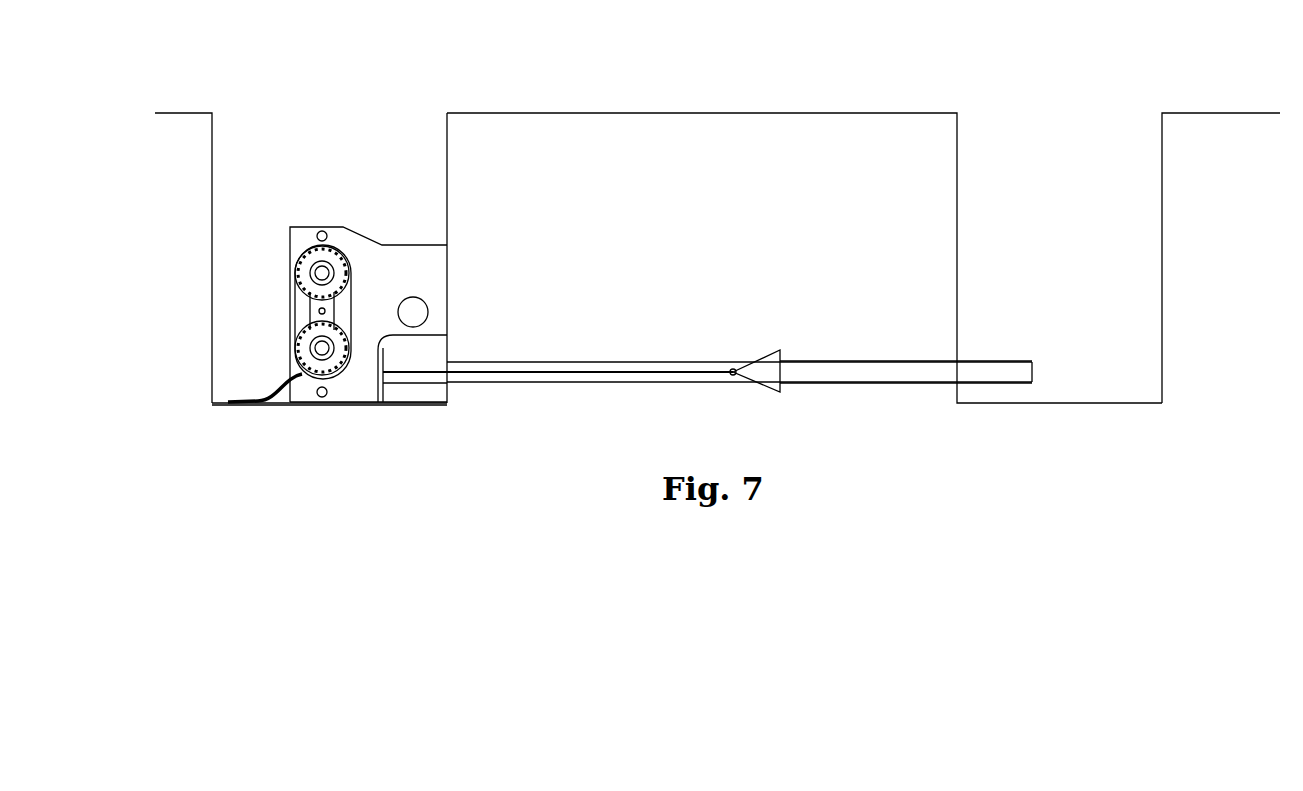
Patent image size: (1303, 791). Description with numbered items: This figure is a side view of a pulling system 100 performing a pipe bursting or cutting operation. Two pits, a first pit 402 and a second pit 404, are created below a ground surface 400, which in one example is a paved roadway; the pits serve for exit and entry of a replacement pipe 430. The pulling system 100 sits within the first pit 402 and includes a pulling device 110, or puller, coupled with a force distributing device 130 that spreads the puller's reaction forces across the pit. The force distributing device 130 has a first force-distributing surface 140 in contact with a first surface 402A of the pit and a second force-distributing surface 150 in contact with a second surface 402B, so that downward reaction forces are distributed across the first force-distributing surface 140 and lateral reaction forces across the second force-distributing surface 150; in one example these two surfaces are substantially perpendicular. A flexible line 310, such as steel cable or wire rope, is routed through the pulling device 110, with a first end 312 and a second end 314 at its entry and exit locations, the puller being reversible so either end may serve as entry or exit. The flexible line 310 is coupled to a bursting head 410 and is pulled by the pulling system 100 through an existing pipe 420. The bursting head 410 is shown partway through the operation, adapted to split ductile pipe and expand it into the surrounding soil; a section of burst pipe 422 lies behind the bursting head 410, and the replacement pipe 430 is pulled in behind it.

The pulling system 100 is at (370, 212).
The pulling device 110 is at (300, 247).
The force distributing device 130 is at (358, 388).
The first force-distributing surface 140 is at (338, 405).
The second force-distributing surface 150 is at (448, 300).
The flexible line 310 is at (599, 372).
The first end 312 is at (734, 370).
The second end 314 is at (233, 397).
The ground surface 400 is at (740, 112).
The first pit 402 is at (212, 232).
The first surface 402A is at (252, 406).
The second surface 402B is at (448, 222).
The second pit 404 is at (1162, 283).
The bursting head 410 is at (776, 354).
The existing pipe 420 is at (688, 362).
The burst pipe 422 is at (835, 361).
The replacement pipe 430 is at (855, 384).